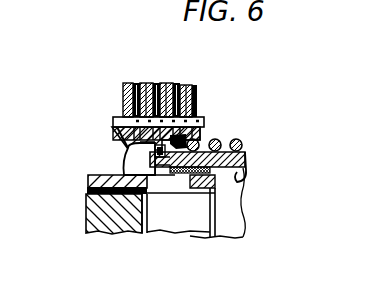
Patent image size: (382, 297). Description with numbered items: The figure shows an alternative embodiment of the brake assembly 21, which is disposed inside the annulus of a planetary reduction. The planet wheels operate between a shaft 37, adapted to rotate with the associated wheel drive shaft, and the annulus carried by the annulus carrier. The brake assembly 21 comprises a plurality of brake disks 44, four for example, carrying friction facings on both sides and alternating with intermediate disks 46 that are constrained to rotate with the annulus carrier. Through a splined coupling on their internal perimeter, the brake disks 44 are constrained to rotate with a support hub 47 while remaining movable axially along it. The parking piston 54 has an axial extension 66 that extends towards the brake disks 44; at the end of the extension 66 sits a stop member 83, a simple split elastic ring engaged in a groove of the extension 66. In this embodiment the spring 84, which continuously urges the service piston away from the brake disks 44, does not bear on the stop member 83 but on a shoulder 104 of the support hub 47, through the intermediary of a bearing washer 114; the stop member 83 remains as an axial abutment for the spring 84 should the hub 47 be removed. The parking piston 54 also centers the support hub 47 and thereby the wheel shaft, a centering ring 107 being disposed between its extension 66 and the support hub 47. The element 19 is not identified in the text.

The stator 19 is at (104, 5).
The brake assembly 21 is at (220, 84).
The shaft 37 is at (100, 202).
The brake disks 44 is at (144, 83).
The intermediate disks 46 is at (128, 83).
The support hub 47 is at (99, 158).
The parking piston 54 is at (255, 150).
The extension 66 is at (246, 184).
The stop member 83 is at (118, 124).
The spring 84 is at (239, 143).
The shoulder 104 is at (200, 128).
The centering ring 107 is at (200, 192).
The bearing washer 114 is at (178, 213).